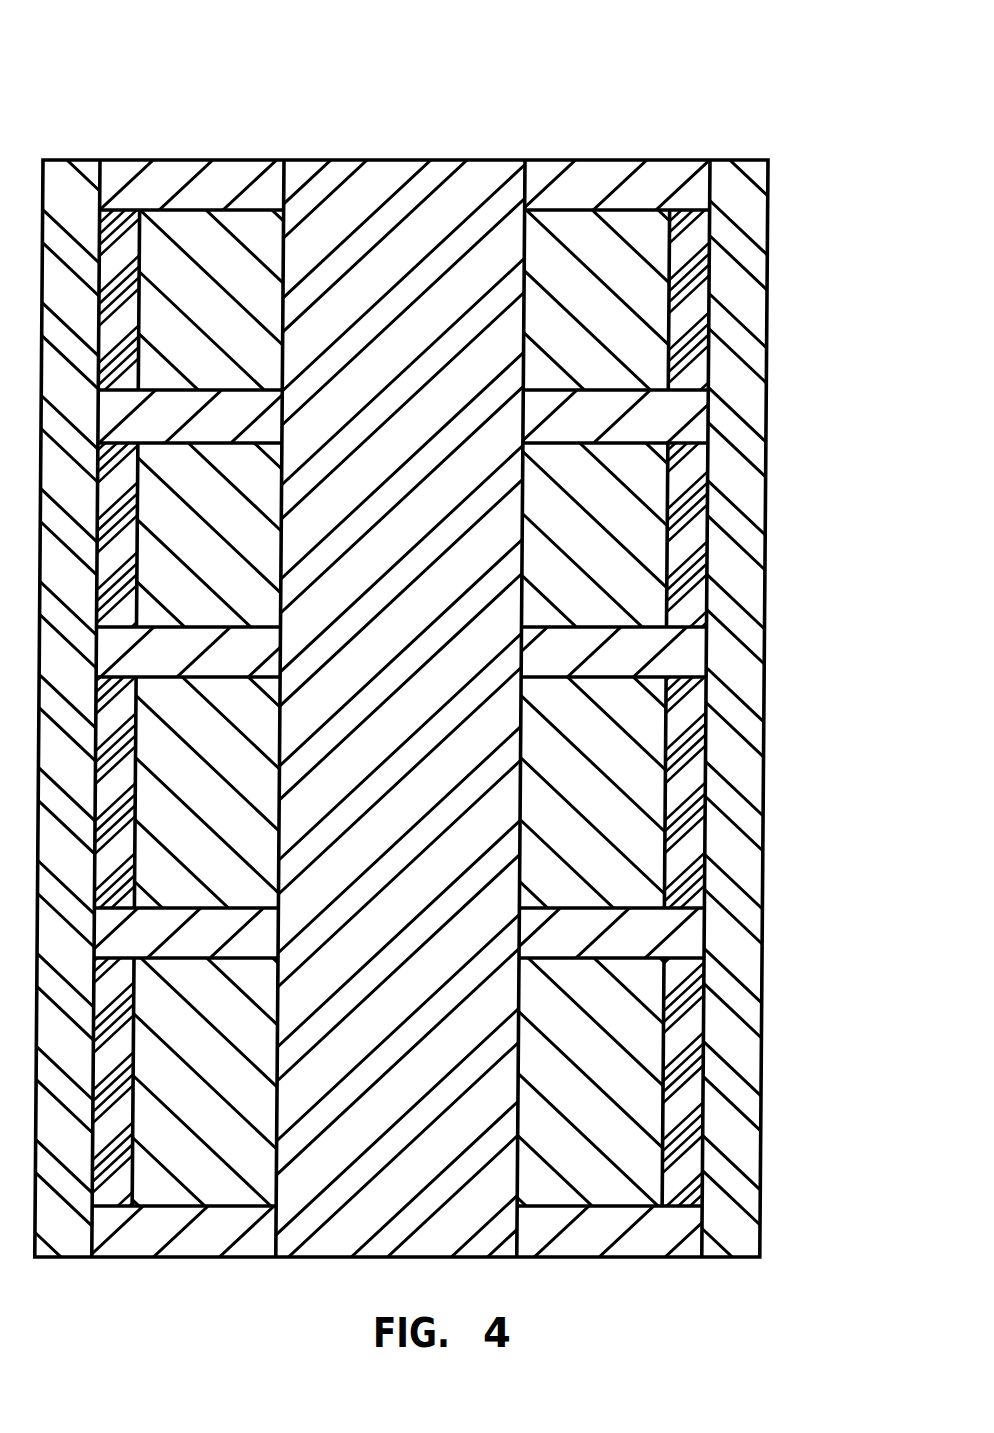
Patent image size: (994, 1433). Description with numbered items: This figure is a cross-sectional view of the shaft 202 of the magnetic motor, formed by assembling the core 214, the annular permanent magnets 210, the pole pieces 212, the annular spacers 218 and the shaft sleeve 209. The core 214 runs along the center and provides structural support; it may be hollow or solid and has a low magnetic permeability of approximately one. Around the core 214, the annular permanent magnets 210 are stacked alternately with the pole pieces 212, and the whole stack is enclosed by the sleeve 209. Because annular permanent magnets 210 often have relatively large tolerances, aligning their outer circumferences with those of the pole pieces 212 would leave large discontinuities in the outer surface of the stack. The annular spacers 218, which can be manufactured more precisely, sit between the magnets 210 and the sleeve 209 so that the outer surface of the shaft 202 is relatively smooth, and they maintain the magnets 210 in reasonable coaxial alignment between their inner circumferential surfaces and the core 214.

The shaft 202 is at (184, 77).
The sleeve 209 is at (768, 1040).
The annular permanent magnets 210 is at (700, 240).
The pole pieces 212 is at (713, 204).
The core 214 is at (524, 823).
The annular spacers 218 is at (716, 345).